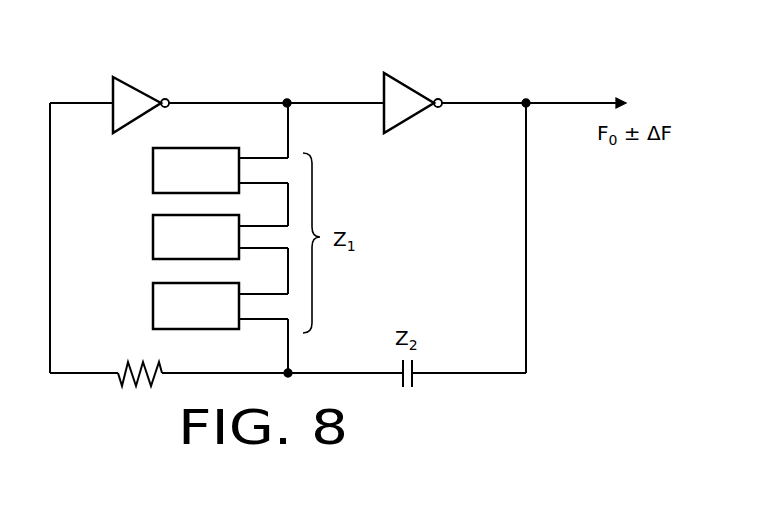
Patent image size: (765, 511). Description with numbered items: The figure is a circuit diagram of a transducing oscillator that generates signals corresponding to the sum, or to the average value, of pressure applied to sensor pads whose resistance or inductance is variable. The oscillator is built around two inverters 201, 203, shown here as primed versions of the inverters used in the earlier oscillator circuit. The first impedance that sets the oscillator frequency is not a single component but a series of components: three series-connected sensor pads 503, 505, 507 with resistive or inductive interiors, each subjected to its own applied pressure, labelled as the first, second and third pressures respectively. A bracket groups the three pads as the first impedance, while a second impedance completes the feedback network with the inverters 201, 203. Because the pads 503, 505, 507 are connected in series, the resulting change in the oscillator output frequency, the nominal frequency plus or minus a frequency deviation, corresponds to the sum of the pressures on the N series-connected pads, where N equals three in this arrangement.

The inverter 201 is at (133, 83).
The inverter 203 is at (410, 83).
The series-connected pad 503 is at (153, 167).
The series-connected pad 505 is at (153, 234).
The series-connected pad 507 is at (153, 297).